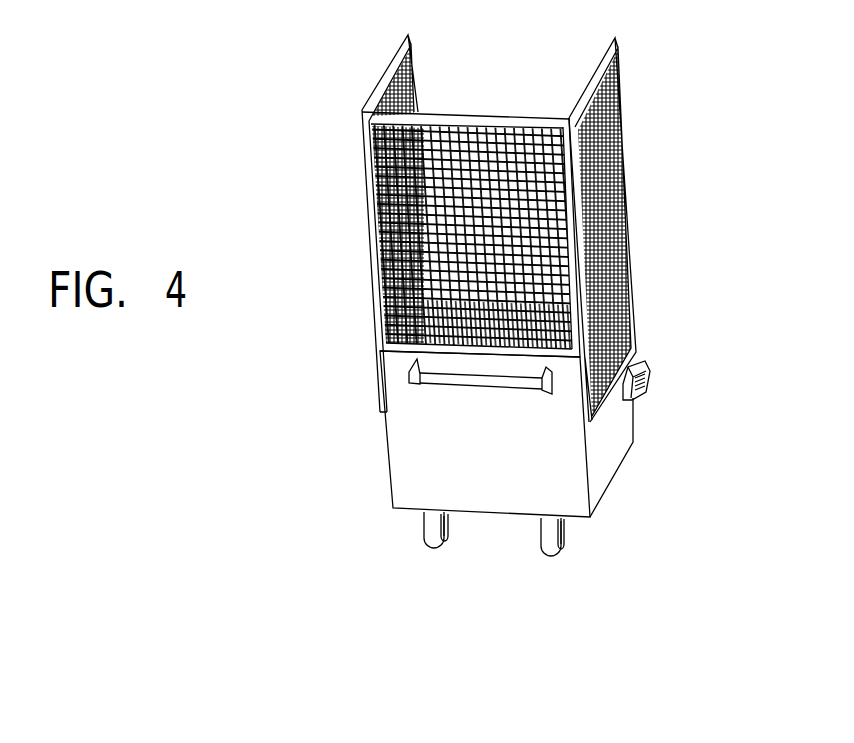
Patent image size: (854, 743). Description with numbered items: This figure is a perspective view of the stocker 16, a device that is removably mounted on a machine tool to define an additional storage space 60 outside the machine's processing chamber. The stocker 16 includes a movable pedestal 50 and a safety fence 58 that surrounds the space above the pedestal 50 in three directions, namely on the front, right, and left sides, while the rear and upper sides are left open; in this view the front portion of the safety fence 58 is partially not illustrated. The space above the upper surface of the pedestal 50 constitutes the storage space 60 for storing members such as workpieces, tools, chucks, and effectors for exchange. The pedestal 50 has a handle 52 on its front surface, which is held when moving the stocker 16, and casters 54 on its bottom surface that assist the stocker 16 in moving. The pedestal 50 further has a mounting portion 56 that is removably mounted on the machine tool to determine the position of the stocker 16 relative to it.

The stocker 16 is at (353, 245).
The pedestal 50 is at (607, 455).
The handle 52 is at (440, 382).
The casters 54 is at (427, 535).
The mounting portion 56 is at (647, 373).
The safety fence 58 is at (633, 202).
The storage space 60 is at (493, 112).